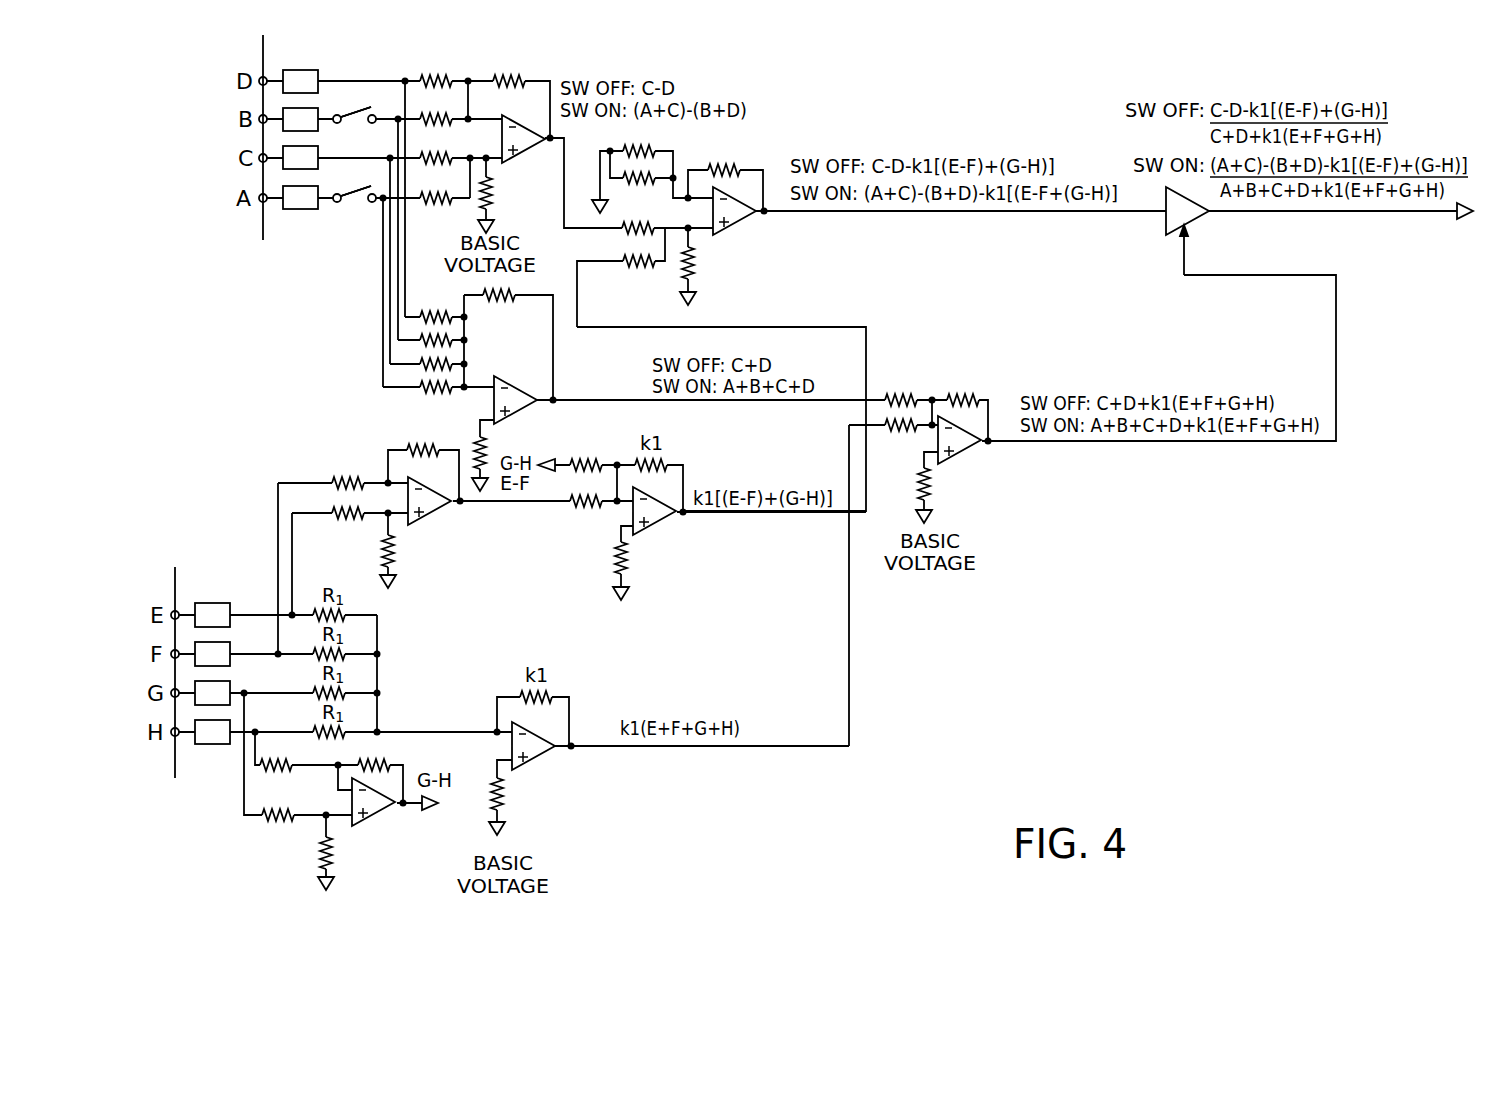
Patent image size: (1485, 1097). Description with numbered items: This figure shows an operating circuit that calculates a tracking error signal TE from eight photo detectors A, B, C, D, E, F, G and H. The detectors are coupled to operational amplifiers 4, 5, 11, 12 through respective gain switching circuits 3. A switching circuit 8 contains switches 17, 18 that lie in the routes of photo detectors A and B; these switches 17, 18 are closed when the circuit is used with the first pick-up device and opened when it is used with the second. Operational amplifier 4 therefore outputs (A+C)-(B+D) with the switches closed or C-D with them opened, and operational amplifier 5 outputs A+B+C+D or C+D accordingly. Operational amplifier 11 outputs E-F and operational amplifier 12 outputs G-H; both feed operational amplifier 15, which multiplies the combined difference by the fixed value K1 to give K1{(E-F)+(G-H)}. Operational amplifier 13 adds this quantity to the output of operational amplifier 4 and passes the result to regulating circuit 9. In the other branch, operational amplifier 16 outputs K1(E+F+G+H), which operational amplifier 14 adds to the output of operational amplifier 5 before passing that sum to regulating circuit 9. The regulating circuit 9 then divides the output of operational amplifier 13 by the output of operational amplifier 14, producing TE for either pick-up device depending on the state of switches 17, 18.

The gain switching circuit 3 is at (298, 70).
The operational amplifier 4 is at (527, 150).
The operational amplifier 5 is at (517, 412).
The switching circuit 8 is at (348, 112).
The regulating circuit 9 is at (1198, 217).
The operational amplifier 11 is at (428, 515).
The operational amplifier 12 is at (368, 820).
The operational amplifier 13 is at (732, 225).
The operational amplifier 14 is at (955, 458).
The operational amplifier 15 is at (647, 530).
The operational amplifier 16 is at (525, 765).
The switch 17 is at (357, 200).
The switch 18 is at (360, 109).